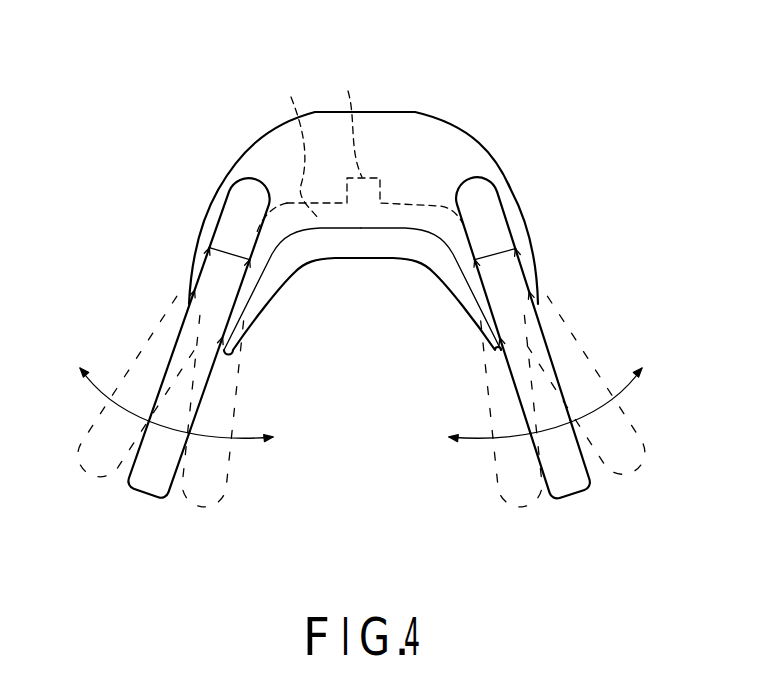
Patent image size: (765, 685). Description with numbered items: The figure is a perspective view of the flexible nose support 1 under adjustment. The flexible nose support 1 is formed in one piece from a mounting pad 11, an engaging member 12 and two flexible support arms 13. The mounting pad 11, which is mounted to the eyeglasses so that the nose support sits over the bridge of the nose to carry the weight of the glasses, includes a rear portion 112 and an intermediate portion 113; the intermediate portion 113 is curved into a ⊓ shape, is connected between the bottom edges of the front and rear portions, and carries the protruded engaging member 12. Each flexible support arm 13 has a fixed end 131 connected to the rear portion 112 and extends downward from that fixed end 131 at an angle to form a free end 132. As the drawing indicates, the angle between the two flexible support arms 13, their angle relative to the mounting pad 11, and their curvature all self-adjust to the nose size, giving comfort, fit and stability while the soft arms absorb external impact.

The flexible nose support 1 is at (105, 90).
The mounting pad 11 is at (479, 131).
The rear portion 112 is at (417, 132).
The intermediate portion 113 is at (296, 141).
The engaging member 12 is at (360, 145).
The flexible support arm 13 is at (178, 336).
The fixed end 131 is at (231, 233).
The free end 132 is at (149, 487).